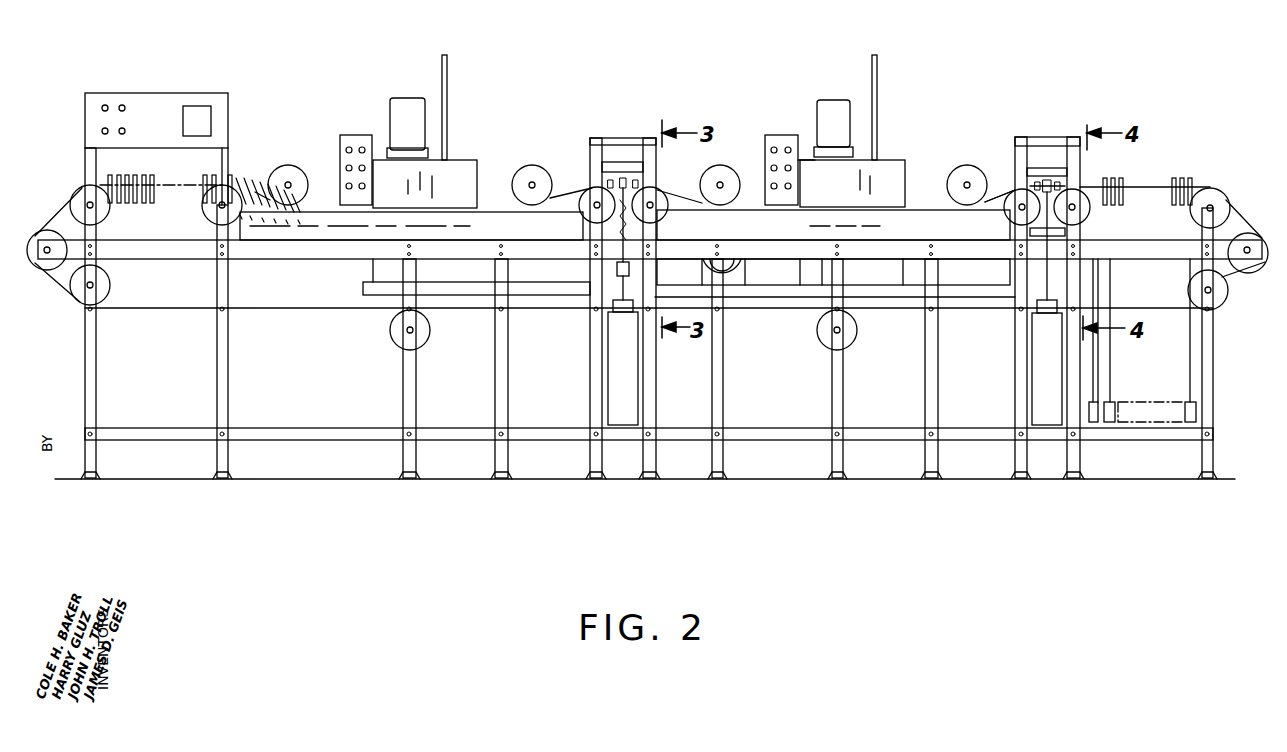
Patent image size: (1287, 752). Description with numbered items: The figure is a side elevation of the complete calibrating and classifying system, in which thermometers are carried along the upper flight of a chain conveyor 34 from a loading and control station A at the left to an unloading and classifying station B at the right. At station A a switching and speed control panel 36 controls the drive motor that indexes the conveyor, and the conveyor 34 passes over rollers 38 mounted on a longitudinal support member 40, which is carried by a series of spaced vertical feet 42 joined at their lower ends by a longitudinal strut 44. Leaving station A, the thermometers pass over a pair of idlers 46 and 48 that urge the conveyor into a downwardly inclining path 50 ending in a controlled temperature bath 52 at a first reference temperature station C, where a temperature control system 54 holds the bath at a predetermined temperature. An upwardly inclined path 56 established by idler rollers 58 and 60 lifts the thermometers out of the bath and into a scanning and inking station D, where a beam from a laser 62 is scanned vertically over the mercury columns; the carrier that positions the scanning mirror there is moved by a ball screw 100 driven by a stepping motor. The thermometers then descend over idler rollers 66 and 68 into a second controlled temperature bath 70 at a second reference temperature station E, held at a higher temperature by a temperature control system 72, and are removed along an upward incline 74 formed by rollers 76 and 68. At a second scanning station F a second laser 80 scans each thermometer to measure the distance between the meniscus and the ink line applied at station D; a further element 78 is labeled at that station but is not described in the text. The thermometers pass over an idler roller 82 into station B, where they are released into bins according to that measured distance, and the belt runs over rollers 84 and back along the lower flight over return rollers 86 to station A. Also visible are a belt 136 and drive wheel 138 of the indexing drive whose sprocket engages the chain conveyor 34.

The chain conveyor 34 is at (185, 187).
The switching and speed control panel 36 is at (163, 102).
The rollers 38 is at (44, 228).
The longitudinal support member 40 is at (312, 250).
The vertical feet 42 is at (97, 400).
The longitudinal strut 44 is at (330, 428).
The idler 46 is at (208, 214).
The idler 48 is at (302, 178).
The downwardly inclining path 50 is at (268, 188).
The controlled temperature bath 52 is at (490, 222).
The temperature control system 54 is at (440, 164).
The upwardly inclined path 56 is at (563, 198).
The idler roller 58 is at (541, 176).
The idler roller 60 is at (618, 215).
The laser 62 is at (682, 192).
The idler roller 66 is at (660, 212).
The idler roller 68 is at (735, 176).
The controlled temperature bath 70 is at (920, 222).
The temperature control system 72 is at (870, 168).
The upward incline 74 is at (995, 200).
The roller 76 is at (970, 165).
The bracket 78 is at (1026, 242).
The second laser 80 is at (1050, 386).
The idler roller 82 is at (1085, 195).
The rollers 84 is at (1242, 236).
The return rollers 86 is at (110, 290).
The ball screw 100 is at (650, 274).
The belt 136 is at (1098, 288).
The drive wheel 138 is at (1085, 216).
The loading and control station A is at (158, 354).
The unloading and classifying station B is at (1182, 165).
The first reference temperature station C is at (358, 115).
The scanning and inking station D is at (648, 118).
The second reference temperature station E is at (836, 85).
The second scanning station F is at (1060, 118).